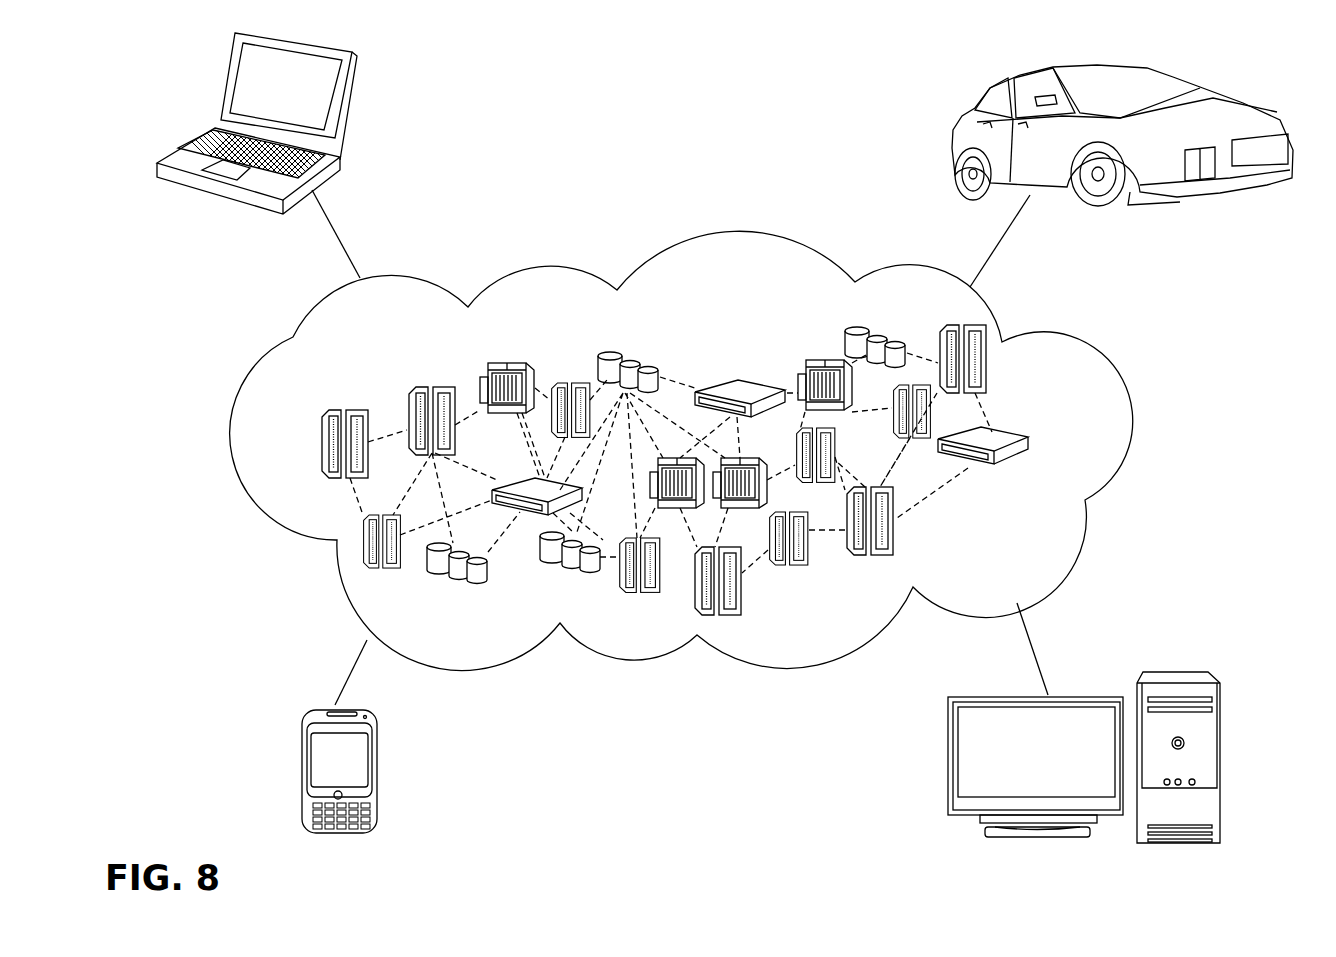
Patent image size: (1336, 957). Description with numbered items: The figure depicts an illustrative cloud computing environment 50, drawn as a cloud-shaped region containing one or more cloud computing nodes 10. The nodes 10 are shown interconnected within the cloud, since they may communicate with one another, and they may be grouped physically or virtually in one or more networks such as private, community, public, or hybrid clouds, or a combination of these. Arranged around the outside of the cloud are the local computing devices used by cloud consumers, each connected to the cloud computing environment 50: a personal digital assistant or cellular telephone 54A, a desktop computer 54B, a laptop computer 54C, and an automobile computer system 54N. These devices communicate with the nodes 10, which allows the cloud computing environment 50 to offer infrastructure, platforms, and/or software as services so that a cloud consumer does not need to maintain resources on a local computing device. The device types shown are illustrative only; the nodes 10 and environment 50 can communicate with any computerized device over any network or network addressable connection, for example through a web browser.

The cloud computing nodes 10 is at (1070, 443).
The cloud computing environment 50 is at (1097, 353).
The personal digital assistant (PDA) or cellular telephone 54A is at (300, 775).
The desktop computer 54B is at (1182, 668).
The laptop computer 54C is at (347, 107).
The automobile computer system 54N is at (960, 117).